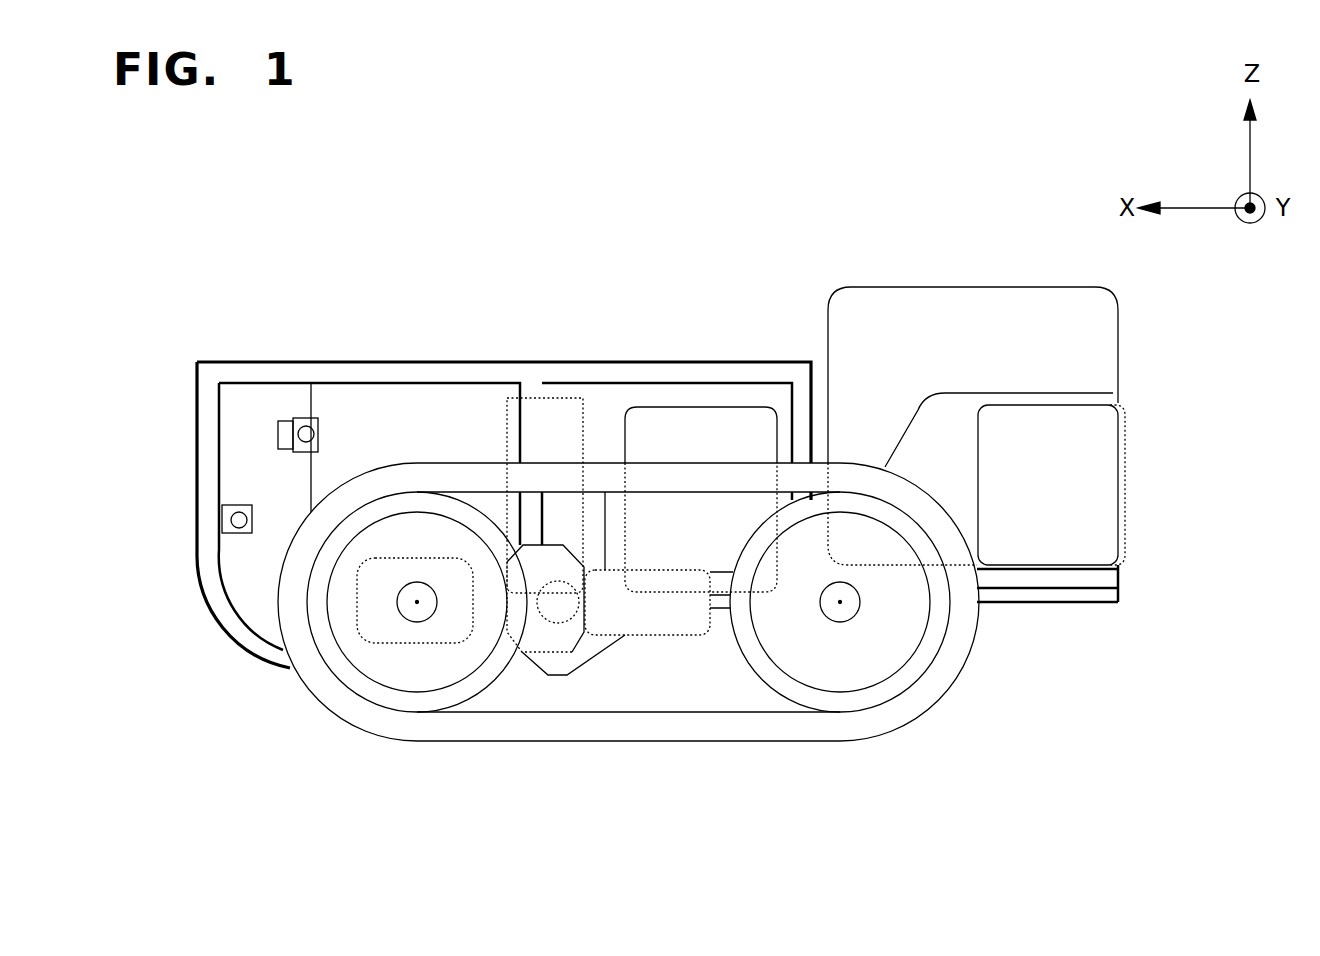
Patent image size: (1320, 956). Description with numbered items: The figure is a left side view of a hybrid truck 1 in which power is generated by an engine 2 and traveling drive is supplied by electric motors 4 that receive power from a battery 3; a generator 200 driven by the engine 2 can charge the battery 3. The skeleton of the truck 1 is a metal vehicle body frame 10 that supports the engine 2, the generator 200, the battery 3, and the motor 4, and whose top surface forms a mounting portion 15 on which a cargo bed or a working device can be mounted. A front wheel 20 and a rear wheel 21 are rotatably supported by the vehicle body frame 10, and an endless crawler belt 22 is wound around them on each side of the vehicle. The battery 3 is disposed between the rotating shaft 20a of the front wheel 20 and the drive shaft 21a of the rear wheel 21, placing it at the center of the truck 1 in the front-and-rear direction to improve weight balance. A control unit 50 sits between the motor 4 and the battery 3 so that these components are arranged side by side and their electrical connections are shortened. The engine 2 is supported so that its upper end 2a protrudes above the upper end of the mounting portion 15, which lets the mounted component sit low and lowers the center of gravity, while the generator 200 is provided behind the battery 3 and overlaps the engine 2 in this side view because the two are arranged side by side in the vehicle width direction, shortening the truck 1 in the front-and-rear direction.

The truck 1 is at (1078, 212).
The engine 2 is at (980, 265).
The upper end of the engine 2a is at (895, 287).
The battery 3 is at (663, 407).
The electric motor 4 is at (353, 620).
The vehicle body frame 10 is at (174, 356).
The mounting portion 15 is at (320, 360).
The front wheel 20 is at (477, 695).
The rotating shaft of the front wheel 20a is at (417, 604).
The rear wheel 21 is at (785, 700).
The drive shaft of the rear wheel 21a is at (840, 604).
The crawler belt 22 is at (683, 742).
The control unit 50 is at (553, 398).
The generator 200 is at (1127, 449).